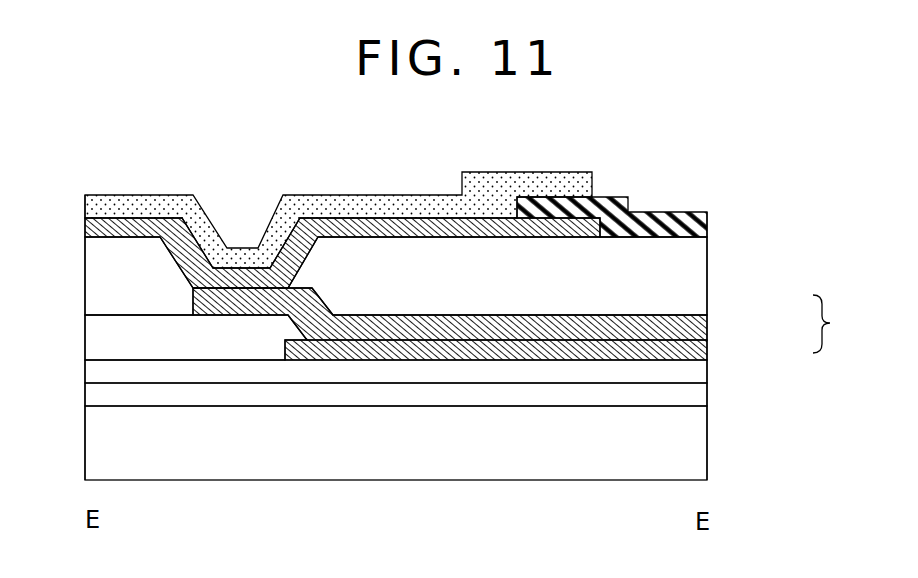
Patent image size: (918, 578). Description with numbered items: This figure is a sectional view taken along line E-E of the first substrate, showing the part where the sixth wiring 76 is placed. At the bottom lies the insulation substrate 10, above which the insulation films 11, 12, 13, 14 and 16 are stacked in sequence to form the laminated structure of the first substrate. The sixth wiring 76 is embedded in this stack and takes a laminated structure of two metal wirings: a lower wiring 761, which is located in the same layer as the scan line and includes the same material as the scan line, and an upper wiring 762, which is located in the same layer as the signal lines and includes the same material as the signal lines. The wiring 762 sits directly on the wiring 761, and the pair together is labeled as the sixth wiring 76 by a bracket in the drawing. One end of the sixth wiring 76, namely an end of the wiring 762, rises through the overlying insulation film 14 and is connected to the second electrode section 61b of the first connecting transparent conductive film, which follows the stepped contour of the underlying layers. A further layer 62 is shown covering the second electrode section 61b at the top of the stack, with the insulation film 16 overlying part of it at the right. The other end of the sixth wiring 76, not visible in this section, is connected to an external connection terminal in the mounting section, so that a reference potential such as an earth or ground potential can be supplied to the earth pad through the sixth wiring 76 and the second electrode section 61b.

The insulation substrate 10 is at (708, 442).
The insulation film 11 is at (708, 393).
The insulation film 12 is at (708, 372).
The insulation film 13 is at (85, 340).
The insulation film 14 is at (708, 275).
The insulation film 16 is at (708, 223).
The second electrode section 61b is at (333, 222).
The insulating film 62 is at (415, 207).
The sixth wiring 76 is at (830, 323).
The wiring 761 is at (708, 352).
The wiring 762 is at (708, 327).